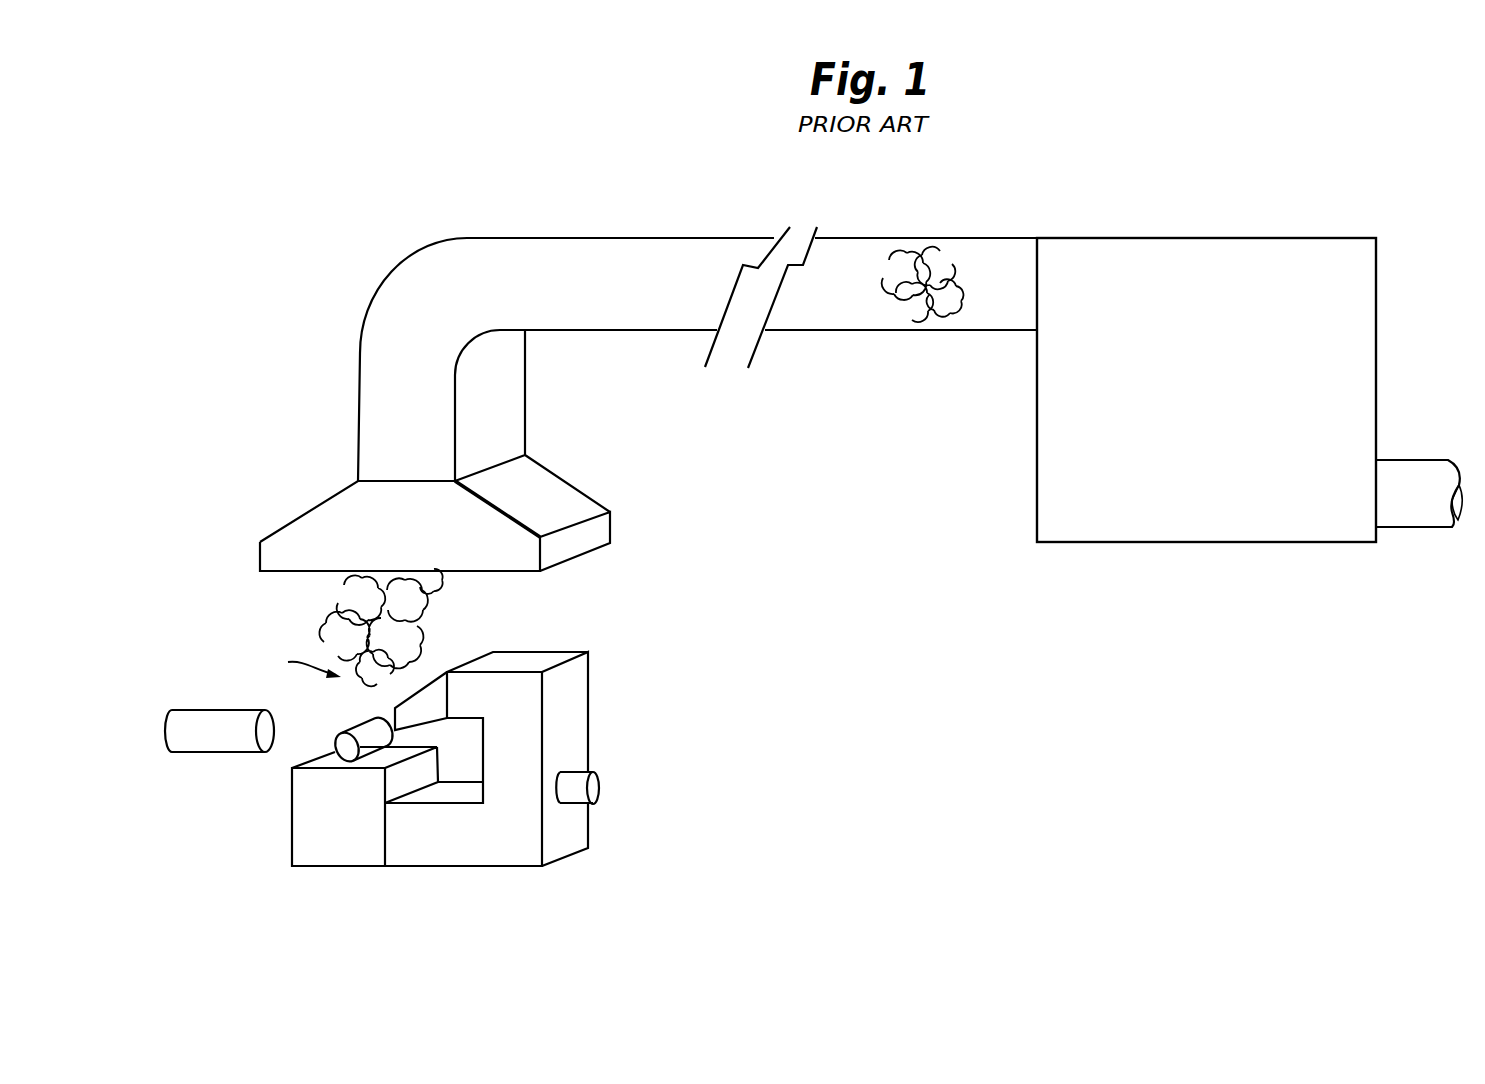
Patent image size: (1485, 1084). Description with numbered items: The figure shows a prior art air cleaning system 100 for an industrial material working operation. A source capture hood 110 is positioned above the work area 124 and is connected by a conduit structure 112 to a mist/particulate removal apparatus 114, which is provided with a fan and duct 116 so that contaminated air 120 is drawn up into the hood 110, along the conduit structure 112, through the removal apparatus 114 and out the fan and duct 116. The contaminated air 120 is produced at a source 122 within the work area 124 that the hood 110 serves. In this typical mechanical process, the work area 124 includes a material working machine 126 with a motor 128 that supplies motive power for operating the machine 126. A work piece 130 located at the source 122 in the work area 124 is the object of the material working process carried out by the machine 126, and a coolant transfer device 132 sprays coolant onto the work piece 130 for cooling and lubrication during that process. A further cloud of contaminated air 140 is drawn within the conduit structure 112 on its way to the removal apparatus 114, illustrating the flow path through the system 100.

The air cleaning system 100 is at (980, 215).
The hood 110 is at (611, 524).
The conduit structure 112 is at (820, 331).
The mist/particulate removal apparatus 114 is at (1196, 543).
The fan and duct 116 is at (1458, 527).
The contaminated air 120 is at (432, 620).
The source 122 is at (293, 664).
The work area 124 is at (345, 858).
The material working machine 126 is at (430, 857).
The motor 128 is at (600, 793).
The work piece 130 is at (333, 750).
The coolant transfer device 132 is at (197, 710).
The fumes in duct 140 is at (948, 300).